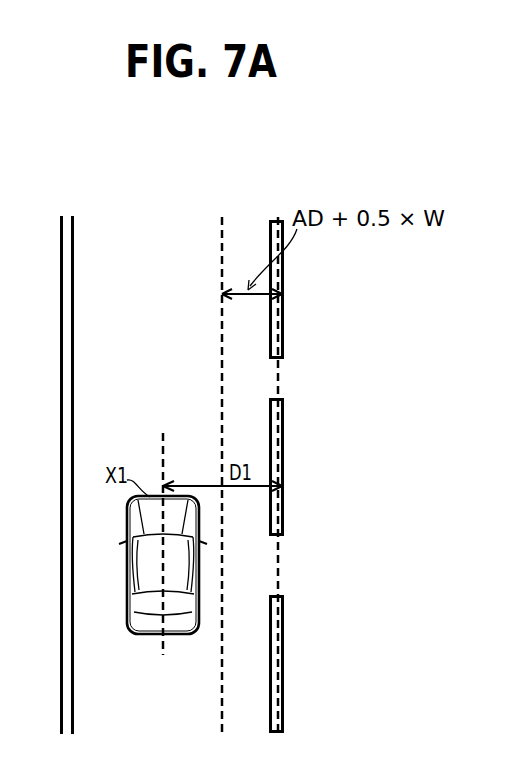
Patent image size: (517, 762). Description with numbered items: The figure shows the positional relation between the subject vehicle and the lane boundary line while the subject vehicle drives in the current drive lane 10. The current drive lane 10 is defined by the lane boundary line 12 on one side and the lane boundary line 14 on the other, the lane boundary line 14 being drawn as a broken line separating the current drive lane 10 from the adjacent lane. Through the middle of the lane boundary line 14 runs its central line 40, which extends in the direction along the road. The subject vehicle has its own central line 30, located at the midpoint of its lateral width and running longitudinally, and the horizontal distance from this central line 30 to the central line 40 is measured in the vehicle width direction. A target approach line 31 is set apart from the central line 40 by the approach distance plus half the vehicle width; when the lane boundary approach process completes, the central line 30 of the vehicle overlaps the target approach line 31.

The current drive lane 10 is at (110, 668).
The lane boundary line 12 is at (60, 271).
The lane boundary line 14 is at (284, 713).
The central line 30 is at (165, 468).
The target approach line 31 is at (220, 272).
The central line 40 is at (281, 574).